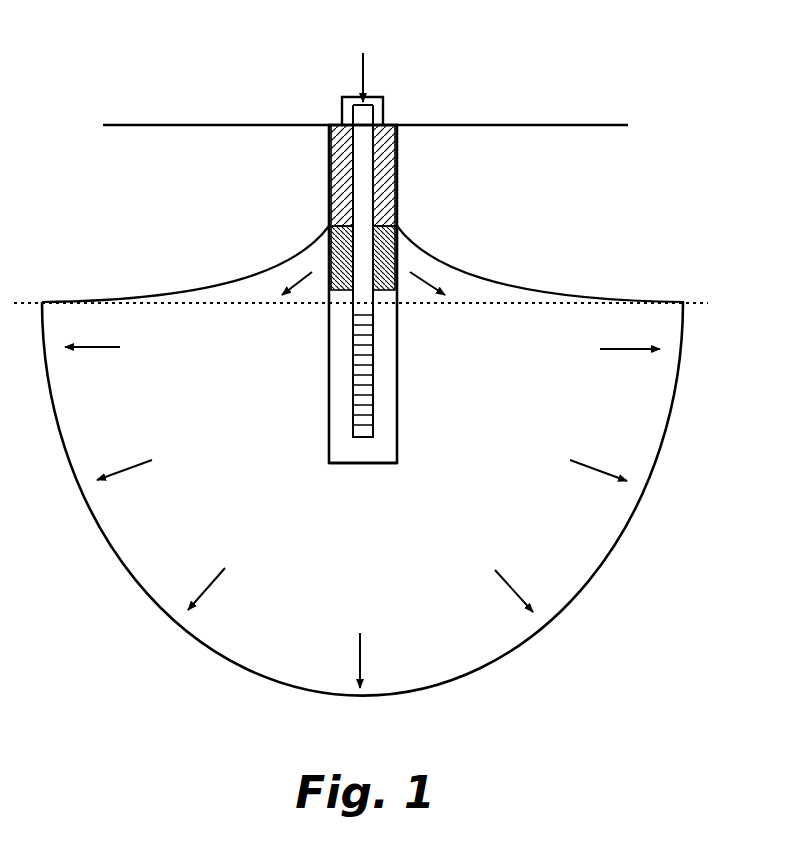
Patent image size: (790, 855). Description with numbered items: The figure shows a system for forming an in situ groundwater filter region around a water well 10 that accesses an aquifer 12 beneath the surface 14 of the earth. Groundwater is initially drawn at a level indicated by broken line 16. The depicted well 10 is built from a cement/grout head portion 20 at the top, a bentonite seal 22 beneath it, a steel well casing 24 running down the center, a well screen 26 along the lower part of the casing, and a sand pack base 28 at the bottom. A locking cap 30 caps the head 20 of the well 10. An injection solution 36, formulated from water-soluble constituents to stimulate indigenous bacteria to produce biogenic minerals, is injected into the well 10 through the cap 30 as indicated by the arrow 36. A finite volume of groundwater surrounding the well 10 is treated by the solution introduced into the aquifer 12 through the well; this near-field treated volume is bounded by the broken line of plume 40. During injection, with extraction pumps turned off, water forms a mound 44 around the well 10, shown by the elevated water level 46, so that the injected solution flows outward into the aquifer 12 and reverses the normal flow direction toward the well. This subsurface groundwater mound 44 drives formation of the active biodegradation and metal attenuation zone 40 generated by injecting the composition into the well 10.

The water well 10 is at (520, 68).
The aquifer 12 is at (100, 742).
The surface of the earth 14 is at (135, 125).
The broken line indicating groundwater level 16 is at (425, 305).
The cement/grout head portion 20 is at (331, 178).
The bentonite seal 22 is at (329, 283).
The steel well casing 24 is at (373, 355).
The well screen 26 is at (353, 378).
The sand pack base 28 is at (340, 447).
The locking cap 30 is at (342, 108).
The injection solution 36 is at (363, 65).
The plume 40 is at (589, 583).
The groundwater mound 44 is at (317, 258).
The elevated water level 46 is at (430, 258).